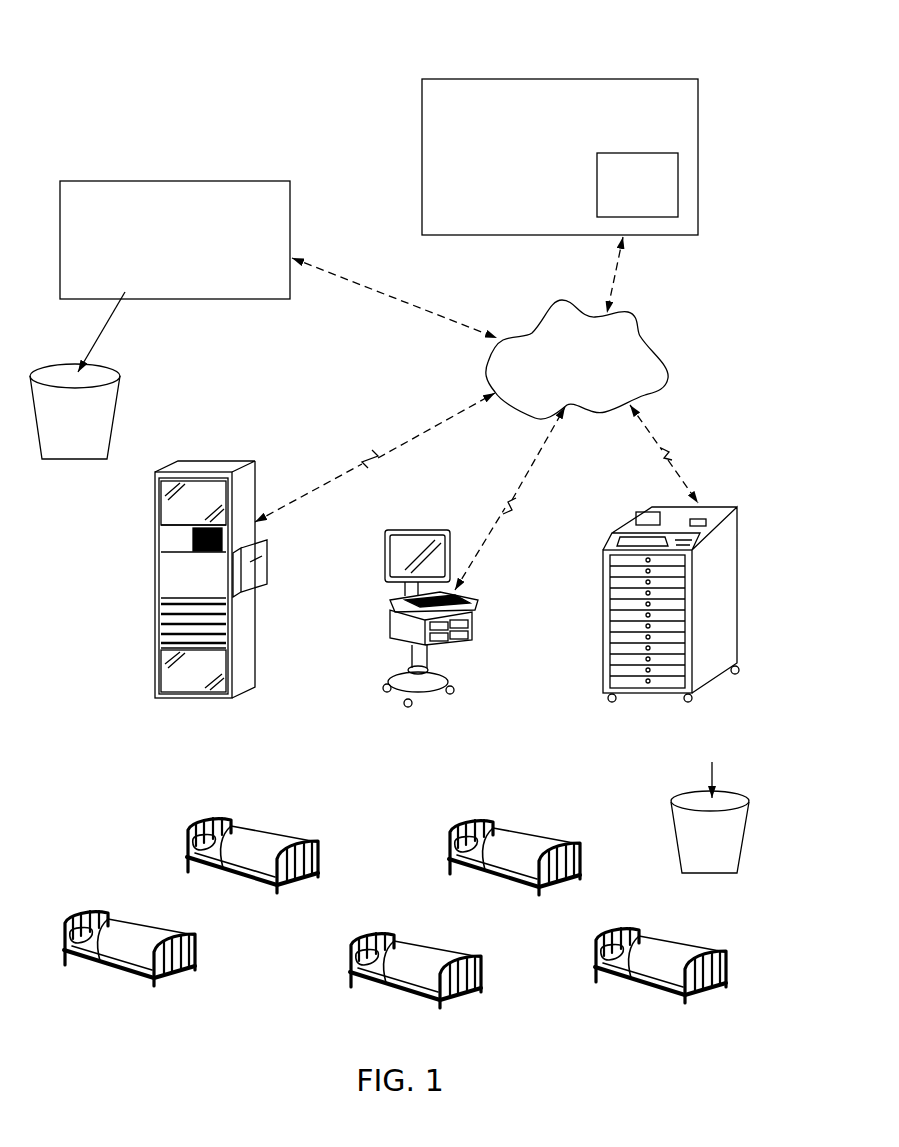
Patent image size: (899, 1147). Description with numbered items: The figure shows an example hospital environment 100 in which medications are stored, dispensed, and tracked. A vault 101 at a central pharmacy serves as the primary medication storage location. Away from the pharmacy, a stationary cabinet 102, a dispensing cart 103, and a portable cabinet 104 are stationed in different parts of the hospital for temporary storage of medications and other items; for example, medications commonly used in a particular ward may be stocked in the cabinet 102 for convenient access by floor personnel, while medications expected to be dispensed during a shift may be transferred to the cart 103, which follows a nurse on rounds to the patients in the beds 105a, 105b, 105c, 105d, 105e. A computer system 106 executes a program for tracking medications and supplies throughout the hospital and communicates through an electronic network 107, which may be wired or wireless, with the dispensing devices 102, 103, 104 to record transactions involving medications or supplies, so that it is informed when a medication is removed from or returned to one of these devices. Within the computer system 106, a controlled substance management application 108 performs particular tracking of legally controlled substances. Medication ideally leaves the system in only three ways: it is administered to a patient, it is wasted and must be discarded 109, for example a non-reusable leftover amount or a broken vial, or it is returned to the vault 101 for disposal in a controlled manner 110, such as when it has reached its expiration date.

The hospital environment 100 is at (150, 38).
The vault 101 is at (232, 190).
The stationary cabinet 102 is at (162, 568).
The cart 103 is at (398, 628).
The portable cabinet 104 is at (615, 612).
The bed 105a is at (132, 952).
The bed 105b is at (261, 865).
The bed 105c is at (411, 980).
The bed 105d is at (515, 865).
The bed 105e is at (659, 973).
The computer system 106 is at (430, 90).
The electronic network 107 is at (556, 315).
The controlled substance management (CSM) application 108 is at (674, 175).
The discarding of medication 109 is at (690, 800).
The disposal in a controlled manner 110 is at (108, 413).